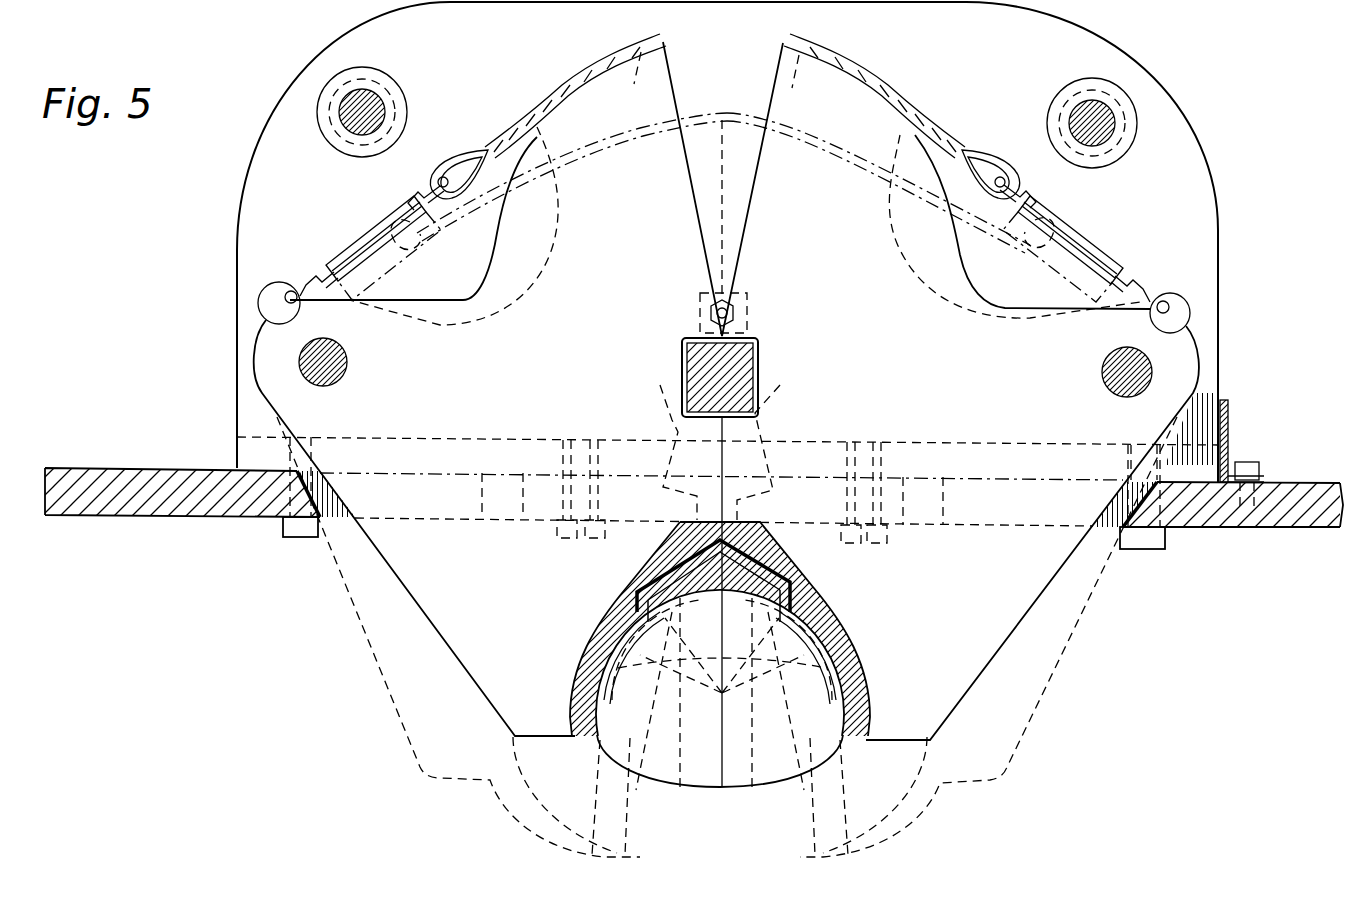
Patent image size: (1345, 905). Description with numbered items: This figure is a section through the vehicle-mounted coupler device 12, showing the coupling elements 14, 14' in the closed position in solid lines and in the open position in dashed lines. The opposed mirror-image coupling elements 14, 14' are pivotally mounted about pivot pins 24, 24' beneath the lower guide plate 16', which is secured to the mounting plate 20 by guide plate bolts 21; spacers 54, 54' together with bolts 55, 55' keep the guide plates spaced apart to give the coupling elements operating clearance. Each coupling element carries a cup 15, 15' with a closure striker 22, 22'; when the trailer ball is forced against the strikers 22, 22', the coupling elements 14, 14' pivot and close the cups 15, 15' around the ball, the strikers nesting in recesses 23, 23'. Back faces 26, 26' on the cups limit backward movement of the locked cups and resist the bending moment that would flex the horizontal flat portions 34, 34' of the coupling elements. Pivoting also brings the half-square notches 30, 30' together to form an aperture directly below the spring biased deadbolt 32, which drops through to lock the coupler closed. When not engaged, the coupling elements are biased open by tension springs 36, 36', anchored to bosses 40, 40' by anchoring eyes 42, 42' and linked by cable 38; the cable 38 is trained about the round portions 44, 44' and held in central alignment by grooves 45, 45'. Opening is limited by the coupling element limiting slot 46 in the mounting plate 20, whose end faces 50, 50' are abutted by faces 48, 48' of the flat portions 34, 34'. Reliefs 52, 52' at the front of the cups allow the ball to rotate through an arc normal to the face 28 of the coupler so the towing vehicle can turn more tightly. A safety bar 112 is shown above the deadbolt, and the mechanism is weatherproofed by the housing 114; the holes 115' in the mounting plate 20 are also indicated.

The vehicle-mounted coupler device 12 is at (1232, 104).
The coupling element 14 is at (589, 284).
The coupling element 14' is at (829, 292).
The cup 15 is at (705, 603).
The cup 15' is at (804, 691).
The lower guide plate 16' is at (204, 274).
The mounting plate 20 is at (197, 468).
The guide plate bolts 21 is at (286, 540).
The striker 22 is at (681, 669).
The striker 22' is at (763, 669).
The recess for striker 23 is at (719, 655).
The recess for striker 23' is at (788, 655).
The pivot pin 24 is at (345, 362).
The pivot pin 24' is at (1095, 372).
The back face of cup 26 is at (720, 666).
The back face of cup 26' is at (741, 555).
The face of mounting plate 28 is at (652, 536).
The half-square notch 30 is at (659, 445).
The half-square notch 30' is at (777, 446).
The deadbolt 32 is at (760, 357).
The flat portion of coupling element 34 is at (494, 552).
The flat portion of coupling element 34' is at (977, 554).
The tension spring 36 is at (372, 243).
The tension spring 36' is at (1075, 243).
The cable 38 is at (533, 118).
The boss of coupling element 40 is at (381, 436).
The boss of coupling element 40' is at (1070, 437).
The anchoring eye 42 is at (242, 303).
The anchoring eye 42' is at (1211, 314).
The round portion of coupling element 44 is at (538, 219).
The round portion of coupling element 44' is at (933, 215).
The groove 45 is at (619, 79).
The groove 45' is at (811, 80).
The coupling element limiting slot 46 is at (330, 520).
The face of flat portion 48 is at (458, 637).
The face of flat portion 48' is at (988, 637).
The end face of slot 50 is at (340, 494).
The end face of slot 50' is at (1135, 460).
The relief in cup 52 is at (571, 796).
The relief in cup 52' is at (868, 796).
The spacer 54 is at (376, 104).
The spacer 54' is at (1087, 111).
The bolt 55 is at (395, 110).
The bolt 55' is at (1057, 123).
The safety bar 112 is at (750, 290).
The weatherproof housing 114 is at (1230, 436).
The plate surface 115' is at (266, 536).